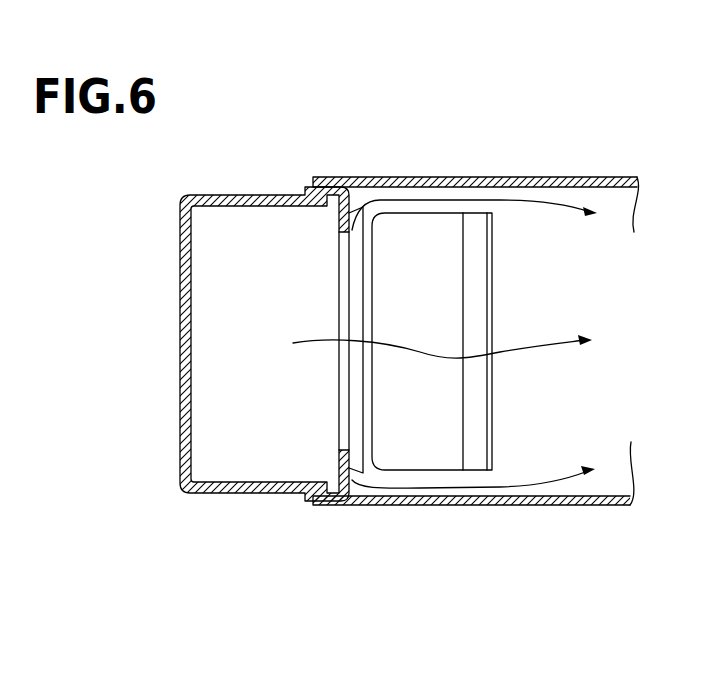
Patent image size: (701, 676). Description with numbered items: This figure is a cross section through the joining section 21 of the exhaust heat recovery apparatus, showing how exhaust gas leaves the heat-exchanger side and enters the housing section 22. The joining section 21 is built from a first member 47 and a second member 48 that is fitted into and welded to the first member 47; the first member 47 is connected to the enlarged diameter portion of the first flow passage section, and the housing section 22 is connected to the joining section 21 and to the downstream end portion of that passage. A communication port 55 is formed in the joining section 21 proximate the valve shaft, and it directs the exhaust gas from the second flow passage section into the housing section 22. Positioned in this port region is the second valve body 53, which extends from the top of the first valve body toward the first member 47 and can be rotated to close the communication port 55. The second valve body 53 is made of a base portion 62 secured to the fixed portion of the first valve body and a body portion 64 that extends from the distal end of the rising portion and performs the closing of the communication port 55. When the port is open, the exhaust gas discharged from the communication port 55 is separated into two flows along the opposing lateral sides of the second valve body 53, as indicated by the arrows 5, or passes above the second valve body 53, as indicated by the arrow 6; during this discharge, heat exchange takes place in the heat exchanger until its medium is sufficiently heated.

The joining section 21 is at (255, 302).
The housing section 22 is at (608, 514).
The first member 47 is at (356, 483).
The second member 48 is at (182, 452).
The second valve body 53 is at (456, 205).
The communication port 55 is at (345, 445).
The base portion 62 is at (473, 255).
The body portion 64 is at (427, 300).
The arrows 5 is at (363, 207).
The arrow 6 is at (422, 348).